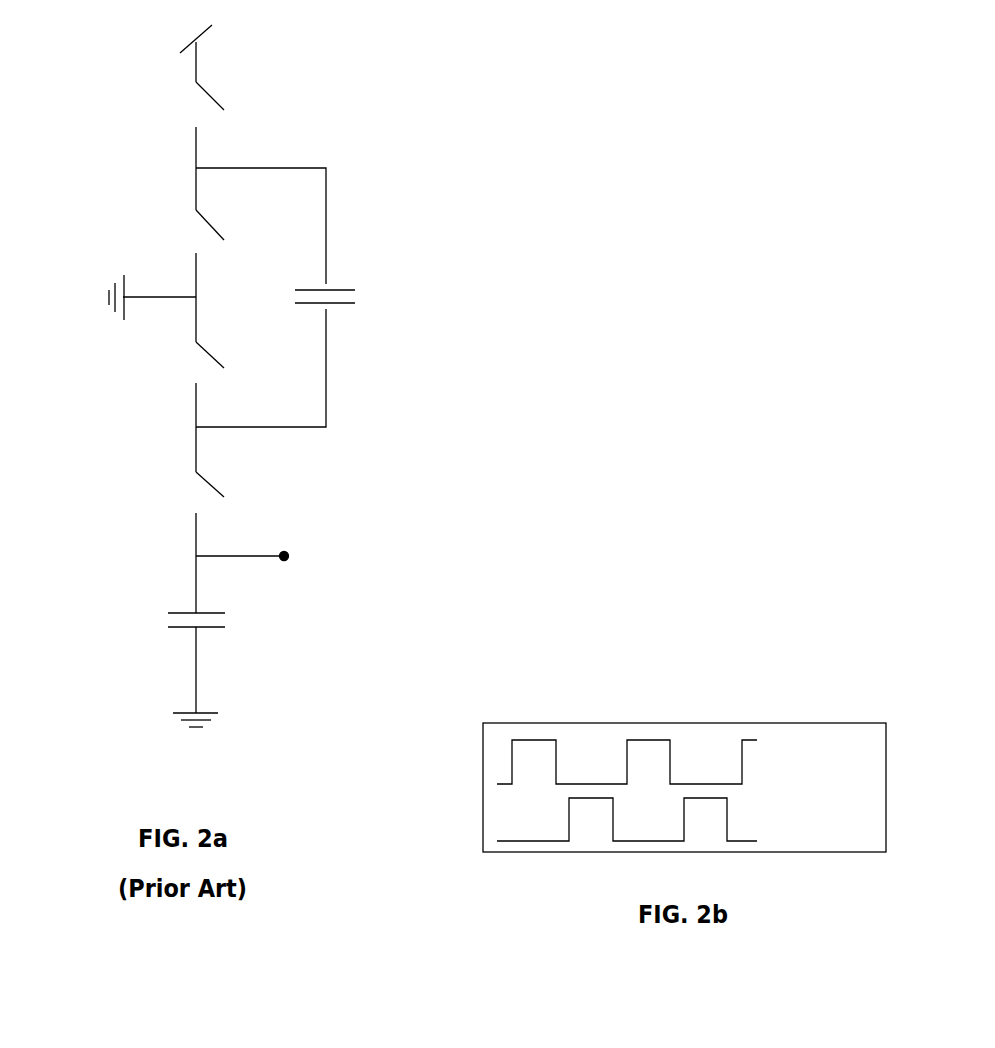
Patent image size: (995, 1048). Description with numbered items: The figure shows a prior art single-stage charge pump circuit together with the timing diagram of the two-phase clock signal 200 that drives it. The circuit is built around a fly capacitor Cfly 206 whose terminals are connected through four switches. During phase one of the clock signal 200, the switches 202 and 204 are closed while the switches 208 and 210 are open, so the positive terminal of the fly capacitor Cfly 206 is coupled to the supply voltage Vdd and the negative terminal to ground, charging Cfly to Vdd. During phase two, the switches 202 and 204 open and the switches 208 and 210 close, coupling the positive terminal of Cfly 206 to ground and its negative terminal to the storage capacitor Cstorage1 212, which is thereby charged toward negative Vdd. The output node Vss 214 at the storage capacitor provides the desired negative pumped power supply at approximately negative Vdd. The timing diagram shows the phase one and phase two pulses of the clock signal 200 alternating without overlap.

In FIG. 2B, the two-phase clock signal 200 is at (652, 723).
In FIG. 2A, the switch 202 is at (212, 92).
In FIG. 2A, the switch 204 is at (220, 360).
In FIG. 2A, the fly capacitor Cfly 206 is at (348, 288).
In FIG. 2A, the switch 208 is at (212, 222).
In FIG. 2A, the switch 210 is at (213, 483).
In FIG. 2A, the storage capacitor Cstorage1 212 is at (175, 630).
In FIG. 2A, the output node Vss 214 is at (268, 553).